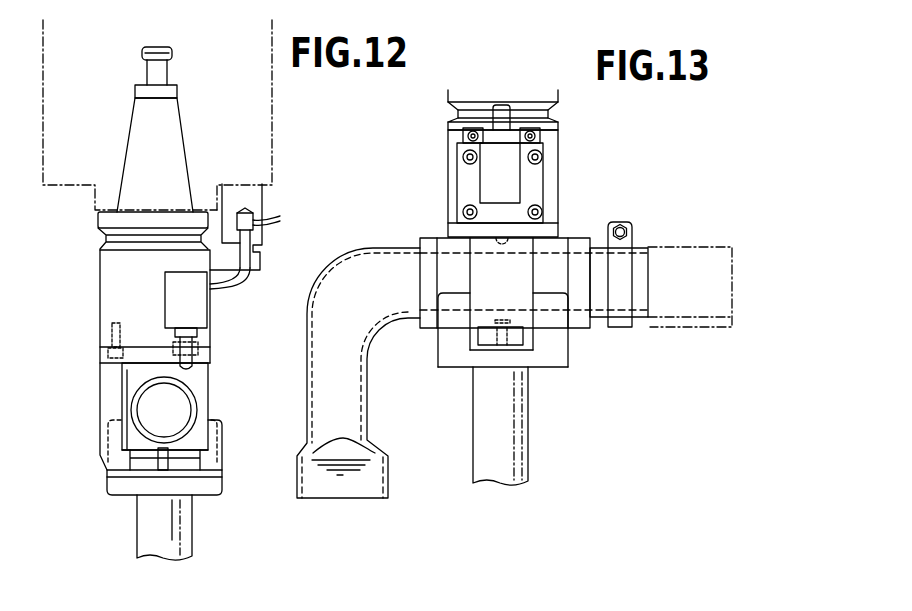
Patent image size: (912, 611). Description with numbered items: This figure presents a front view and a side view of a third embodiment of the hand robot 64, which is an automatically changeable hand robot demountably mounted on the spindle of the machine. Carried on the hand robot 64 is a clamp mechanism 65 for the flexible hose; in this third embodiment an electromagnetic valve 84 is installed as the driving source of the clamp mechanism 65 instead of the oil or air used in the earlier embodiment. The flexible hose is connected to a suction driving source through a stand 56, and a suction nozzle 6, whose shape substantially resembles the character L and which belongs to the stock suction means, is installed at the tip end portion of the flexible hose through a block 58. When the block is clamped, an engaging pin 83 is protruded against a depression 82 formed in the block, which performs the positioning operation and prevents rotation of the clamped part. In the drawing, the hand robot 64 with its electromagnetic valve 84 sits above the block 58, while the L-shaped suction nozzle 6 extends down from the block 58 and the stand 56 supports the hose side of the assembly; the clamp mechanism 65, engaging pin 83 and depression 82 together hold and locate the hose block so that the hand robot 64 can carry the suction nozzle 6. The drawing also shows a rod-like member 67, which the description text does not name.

In FIG. 12, the suction nozzle 6 is at (137, 412).
In FIG. 13, the suction nozzle 6 is at (360, 412).
In FIG. 13, the stand 56 is at (523, 406).
In FIG. 13, the block 58 is at (425, 243).
In FIG. 12, the hand robot 64 is at (259, 285).
In FIG. 13, the hand robot 64 is at (565, 194).
In FIG. 12, the clamp mechanism 65 is at (213, 345).
In FIG. 13, the clamp mechanism 65 is at (446, 180).
In FIG. 13, the rod 67 is at (677, 242).
In FIG. 12, the depression 82 is at (206, 380).
In FIG. 12, the engaging pin 83 is at (192, 366).
In FIG. 12, the electromagnetic valve 84 is at (208, 309).
In FIG. 13, the electromagnetic valve 84 is at (543, 168).